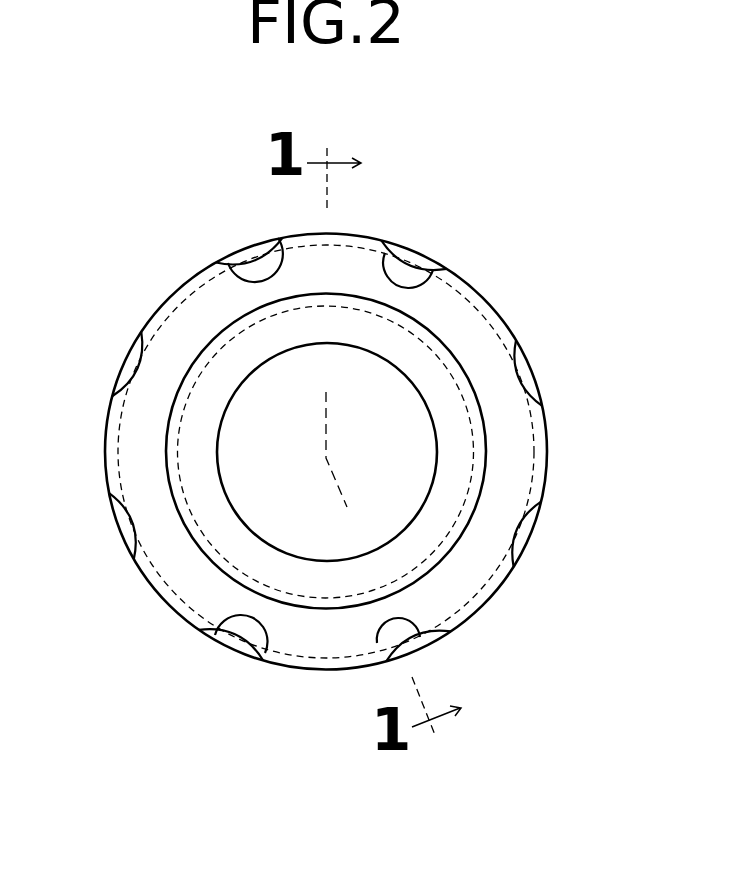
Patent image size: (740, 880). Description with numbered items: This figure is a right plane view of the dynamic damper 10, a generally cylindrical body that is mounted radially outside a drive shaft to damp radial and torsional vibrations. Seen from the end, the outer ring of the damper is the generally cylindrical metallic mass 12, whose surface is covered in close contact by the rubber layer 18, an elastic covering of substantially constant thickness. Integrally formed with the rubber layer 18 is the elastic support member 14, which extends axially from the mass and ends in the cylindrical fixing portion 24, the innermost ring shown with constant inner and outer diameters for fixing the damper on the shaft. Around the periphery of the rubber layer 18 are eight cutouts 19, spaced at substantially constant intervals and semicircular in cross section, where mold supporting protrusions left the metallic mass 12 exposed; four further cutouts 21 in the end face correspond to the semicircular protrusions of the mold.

The dynamic damper 10 is at (523, 238).
The metallic mass 12 is at (136, 428).
The elastic support member 14 is at (190, 547).
The rubber layer 18 is at (540, 451).
The cutouts 19 is at (252, 252).
The cutouts 21 is at (291, 244).
The cylindrical fixing portion 24 is at (220, 375).